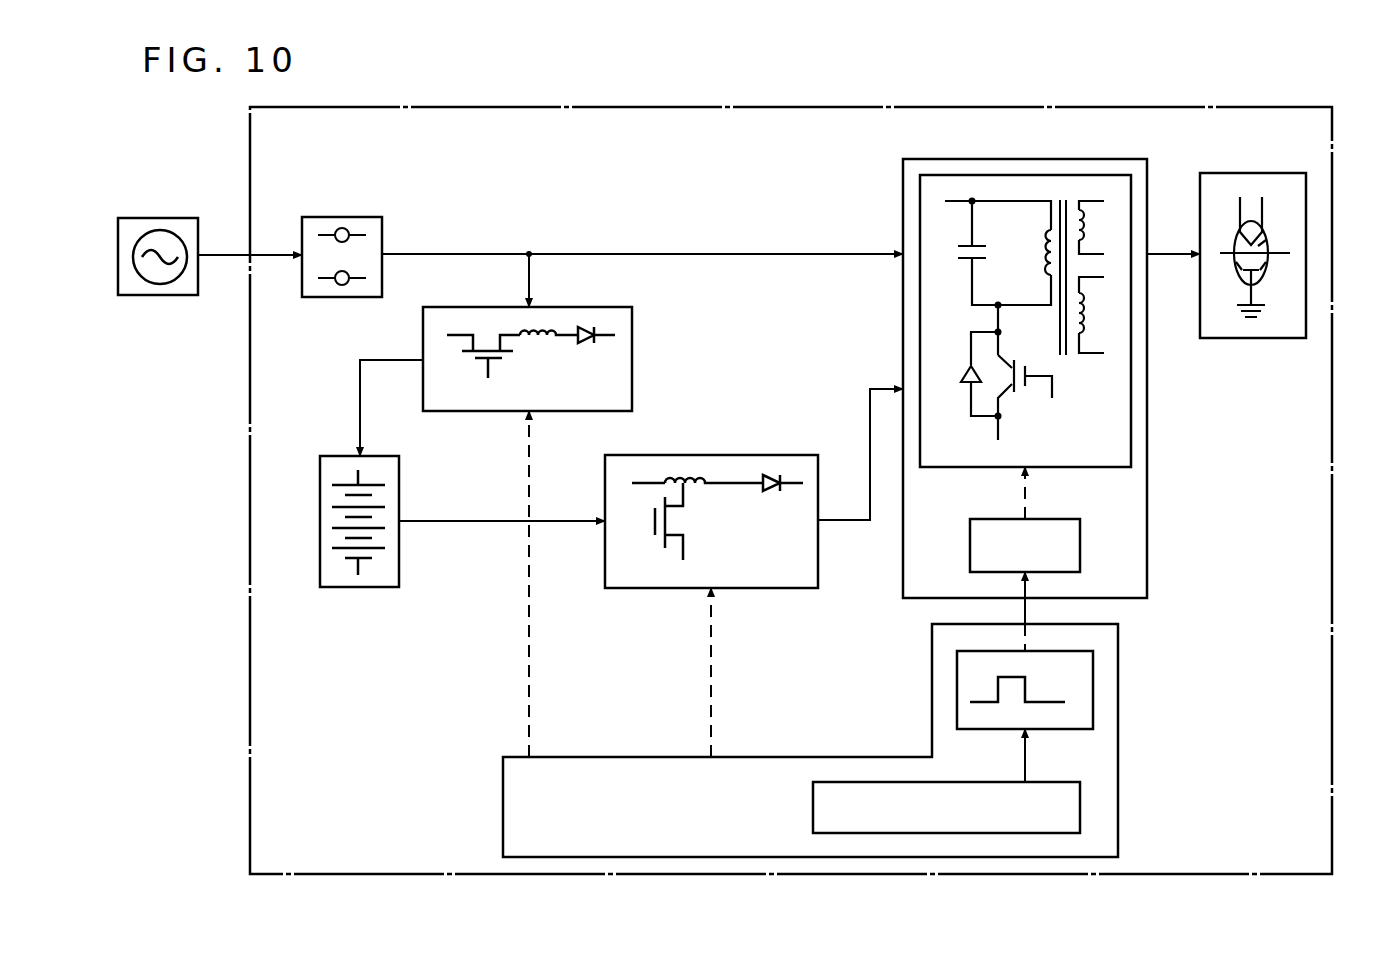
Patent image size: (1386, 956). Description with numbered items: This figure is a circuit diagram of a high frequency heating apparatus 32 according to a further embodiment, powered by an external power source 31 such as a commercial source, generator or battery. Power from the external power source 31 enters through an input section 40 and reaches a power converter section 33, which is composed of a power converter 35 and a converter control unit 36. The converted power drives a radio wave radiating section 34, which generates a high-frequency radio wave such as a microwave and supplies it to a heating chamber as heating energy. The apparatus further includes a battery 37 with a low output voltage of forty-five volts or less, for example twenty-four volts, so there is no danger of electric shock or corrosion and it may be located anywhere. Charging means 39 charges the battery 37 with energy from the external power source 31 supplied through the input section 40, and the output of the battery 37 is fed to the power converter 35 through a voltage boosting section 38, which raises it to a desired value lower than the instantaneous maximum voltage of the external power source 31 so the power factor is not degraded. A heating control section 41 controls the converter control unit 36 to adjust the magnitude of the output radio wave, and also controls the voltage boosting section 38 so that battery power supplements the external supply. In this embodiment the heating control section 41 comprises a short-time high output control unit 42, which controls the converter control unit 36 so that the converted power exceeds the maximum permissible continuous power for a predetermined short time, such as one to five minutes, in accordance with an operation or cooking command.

The external power source 31 is at (160, 218).
The high frequency heating apparatus 32 is at (1163, 107).
The power converter section 33 is at (903, 316).
The radio wave radiating section 34 is at (1250, 173).
The power converter 35 is at (1022, 175).
The converter control unit 36 is at (1082, 545).
The battery 37 is at (360, 588).
The voltage boosting section 38 is at (718, 455).
The charging means 39 is at (634, 360).
The input section 40 is at (342, 217).
The heating control section 41 is at (1120, 815).
The short-time high output control unit 42 is at (1095, 690).